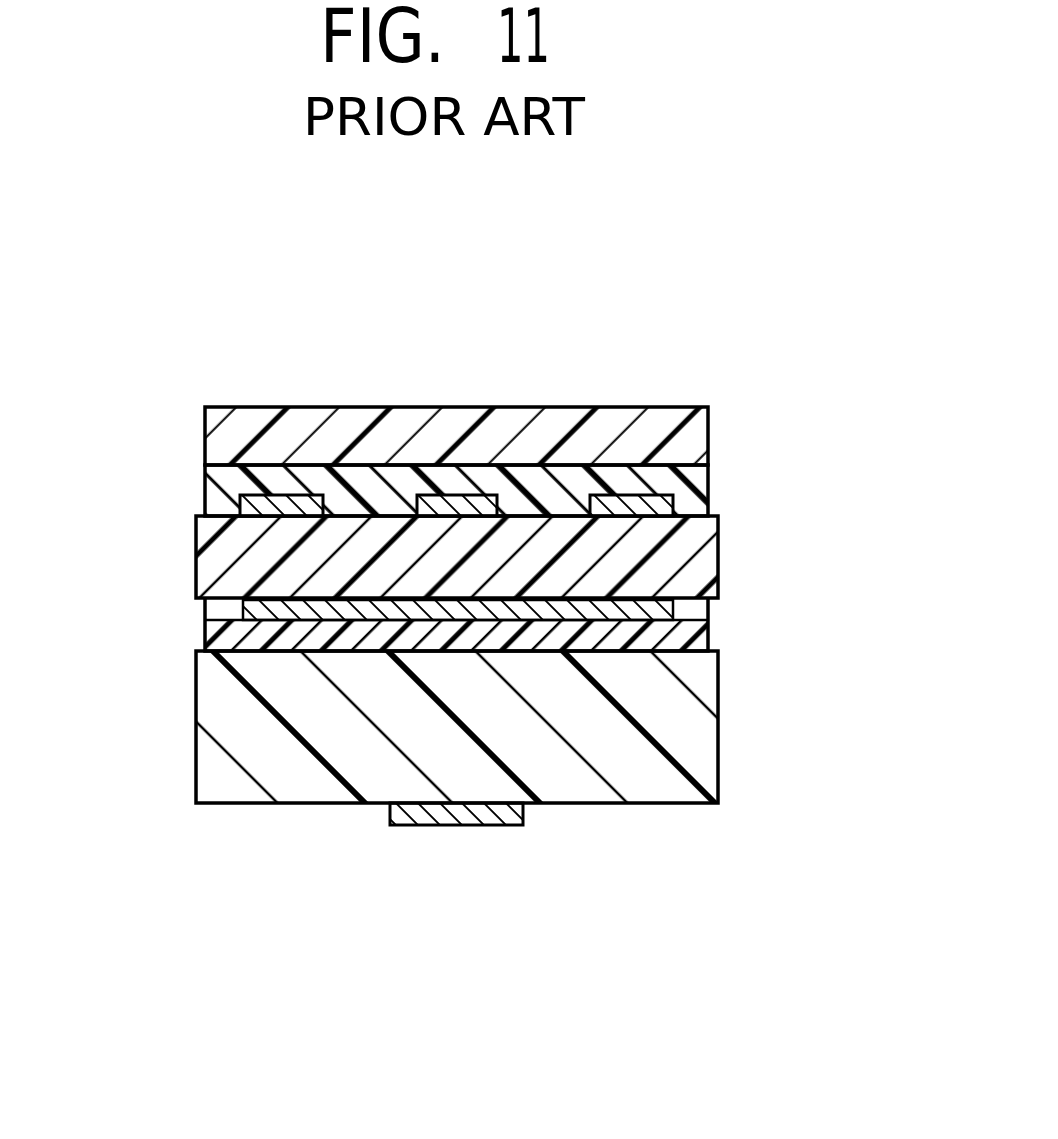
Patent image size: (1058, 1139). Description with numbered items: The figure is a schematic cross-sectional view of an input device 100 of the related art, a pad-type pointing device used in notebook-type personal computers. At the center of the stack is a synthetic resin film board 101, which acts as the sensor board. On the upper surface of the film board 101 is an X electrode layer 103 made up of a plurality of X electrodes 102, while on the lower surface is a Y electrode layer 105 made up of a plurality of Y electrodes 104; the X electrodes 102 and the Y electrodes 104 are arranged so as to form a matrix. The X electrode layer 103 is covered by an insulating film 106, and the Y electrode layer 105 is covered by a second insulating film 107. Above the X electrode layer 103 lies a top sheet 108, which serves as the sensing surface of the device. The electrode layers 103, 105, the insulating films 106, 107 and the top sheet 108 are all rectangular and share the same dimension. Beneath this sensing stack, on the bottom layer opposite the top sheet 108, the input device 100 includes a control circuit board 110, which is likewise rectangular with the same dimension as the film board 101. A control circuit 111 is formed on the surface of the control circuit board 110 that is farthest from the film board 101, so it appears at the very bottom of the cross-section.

The input device 100 is at (706, 360).
The film board 101 is at (227, 563).
The X electrodes 102 is at (300, 502).
The X electrode layer 103 is at (692, 506).
The Y electrodes 104 is at (215, 612).
The Y electrode layer 105 is at (692, 608).
The insulating film 106 is at (223, 492).
The insulating film 107 is at (697, 635).
The top sheet 108 is at (230, 433).
The control circuit board 110 is at (233, 730).
The control circuit 111 is at (460, 820).